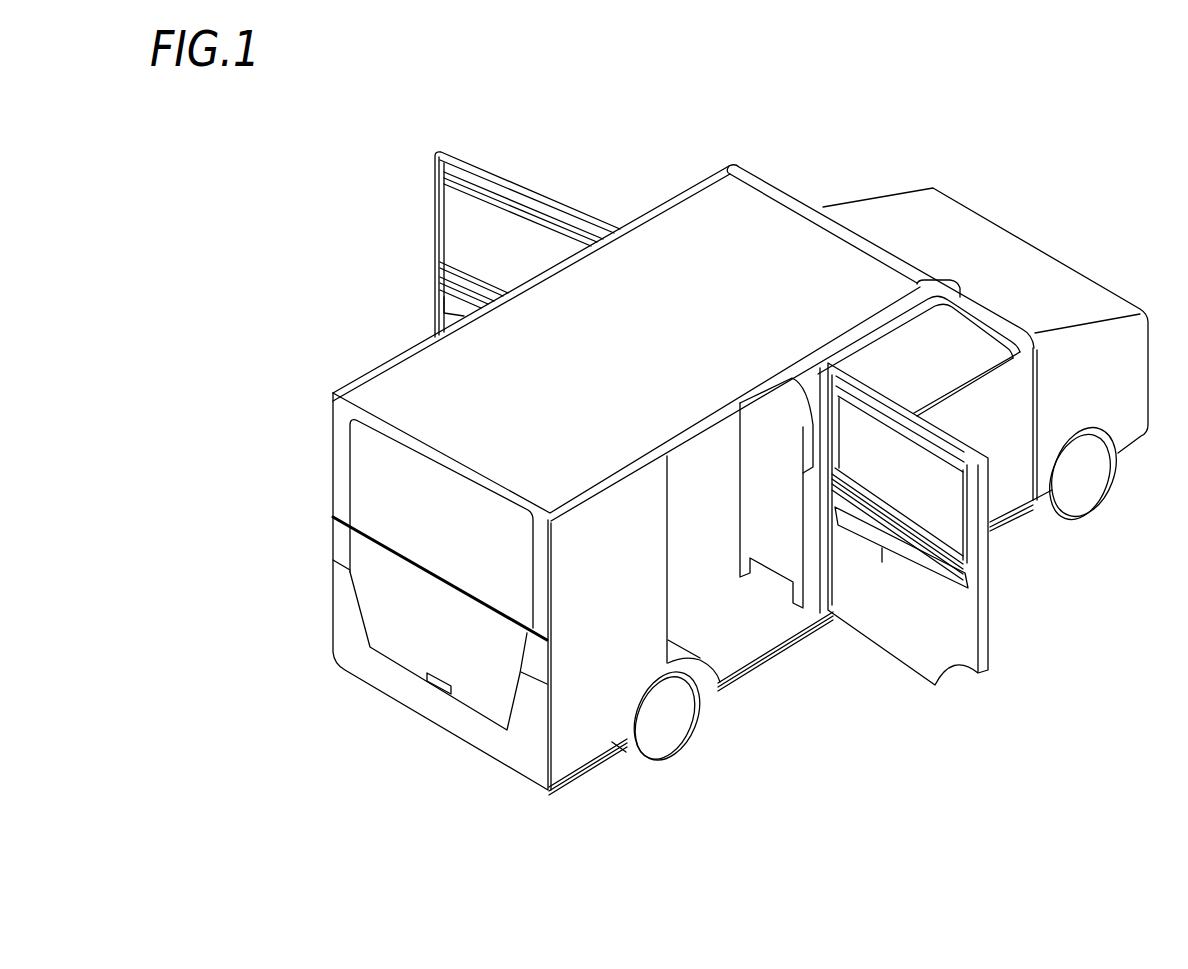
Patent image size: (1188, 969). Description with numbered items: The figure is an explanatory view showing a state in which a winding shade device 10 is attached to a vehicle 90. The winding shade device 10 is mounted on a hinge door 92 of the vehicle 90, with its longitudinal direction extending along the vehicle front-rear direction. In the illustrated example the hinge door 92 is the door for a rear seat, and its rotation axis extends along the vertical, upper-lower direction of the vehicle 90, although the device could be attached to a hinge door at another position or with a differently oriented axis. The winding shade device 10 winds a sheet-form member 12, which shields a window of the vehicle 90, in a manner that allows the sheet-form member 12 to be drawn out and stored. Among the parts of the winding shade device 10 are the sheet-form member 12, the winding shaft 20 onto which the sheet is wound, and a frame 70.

The winding shade device 10 is at (437, 286).
The sheet-form member 12 is at (455, 220).
The winding shaft 20 is at (440, 281).
The frame 70 is at (442, 300).
The vehicle 90 is at (690, 190).
The hinge door 92 is at (511, 183).